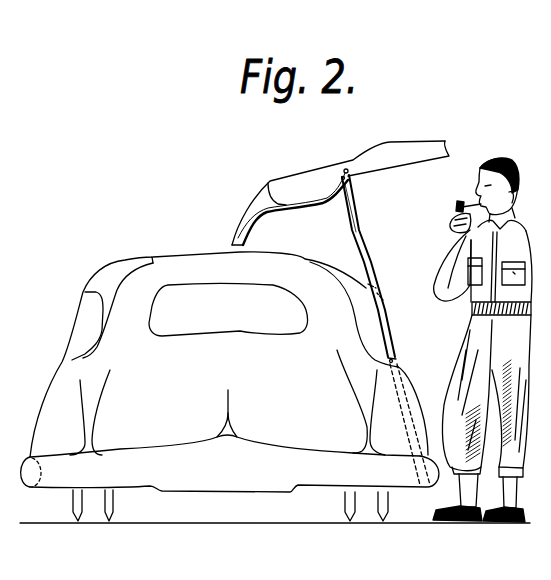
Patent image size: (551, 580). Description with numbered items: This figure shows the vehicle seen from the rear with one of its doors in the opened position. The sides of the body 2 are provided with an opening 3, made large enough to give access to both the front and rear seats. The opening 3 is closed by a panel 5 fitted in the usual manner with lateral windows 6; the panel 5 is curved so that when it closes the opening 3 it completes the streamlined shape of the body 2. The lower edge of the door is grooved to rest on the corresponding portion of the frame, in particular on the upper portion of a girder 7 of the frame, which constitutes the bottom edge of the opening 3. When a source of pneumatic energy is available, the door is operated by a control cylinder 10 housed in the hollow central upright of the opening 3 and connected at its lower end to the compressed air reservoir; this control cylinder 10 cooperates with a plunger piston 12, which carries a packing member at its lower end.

The body 2 is at (277, 433).
The opening 3 is at (366, 313).
The panel 5 is at (266, 202).
The lateral windows 6 is at (325, 177).
The girder 7 is at (422, 477).
The control cylinder 10 is at (394, 346).
The plunger piston 12 is at (355, 236).